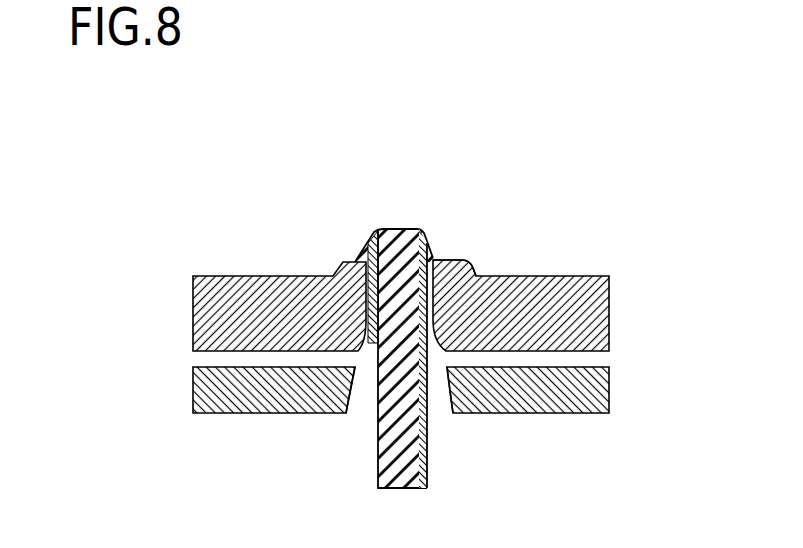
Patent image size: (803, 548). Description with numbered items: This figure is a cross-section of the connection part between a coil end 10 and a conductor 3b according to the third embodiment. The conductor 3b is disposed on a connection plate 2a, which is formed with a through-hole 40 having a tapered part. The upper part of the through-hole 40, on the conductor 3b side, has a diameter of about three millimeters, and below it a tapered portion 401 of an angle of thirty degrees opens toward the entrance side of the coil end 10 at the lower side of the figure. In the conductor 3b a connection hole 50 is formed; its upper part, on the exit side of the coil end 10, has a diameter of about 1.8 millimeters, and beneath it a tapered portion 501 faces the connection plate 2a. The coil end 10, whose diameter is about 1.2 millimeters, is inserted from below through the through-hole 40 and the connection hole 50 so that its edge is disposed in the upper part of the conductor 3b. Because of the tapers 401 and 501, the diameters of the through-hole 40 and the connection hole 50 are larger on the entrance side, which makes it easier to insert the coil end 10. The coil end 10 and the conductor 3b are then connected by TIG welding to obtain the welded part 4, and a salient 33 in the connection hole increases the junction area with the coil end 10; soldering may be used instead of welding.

The coil end 10 is at (400, 230).
The welded part 4 is at (443, 258).
The salient 33 is at (462, 258).
The connection hole 50 is at (500, 303).
The conductor 3b is at (325, 295).
The through-hole 40 is at (437, 382).
The connection plate 2a is at (307, 390).
The tapered portion 401 is at (352, 398).
The tapered portion 501 is at (428, 400).